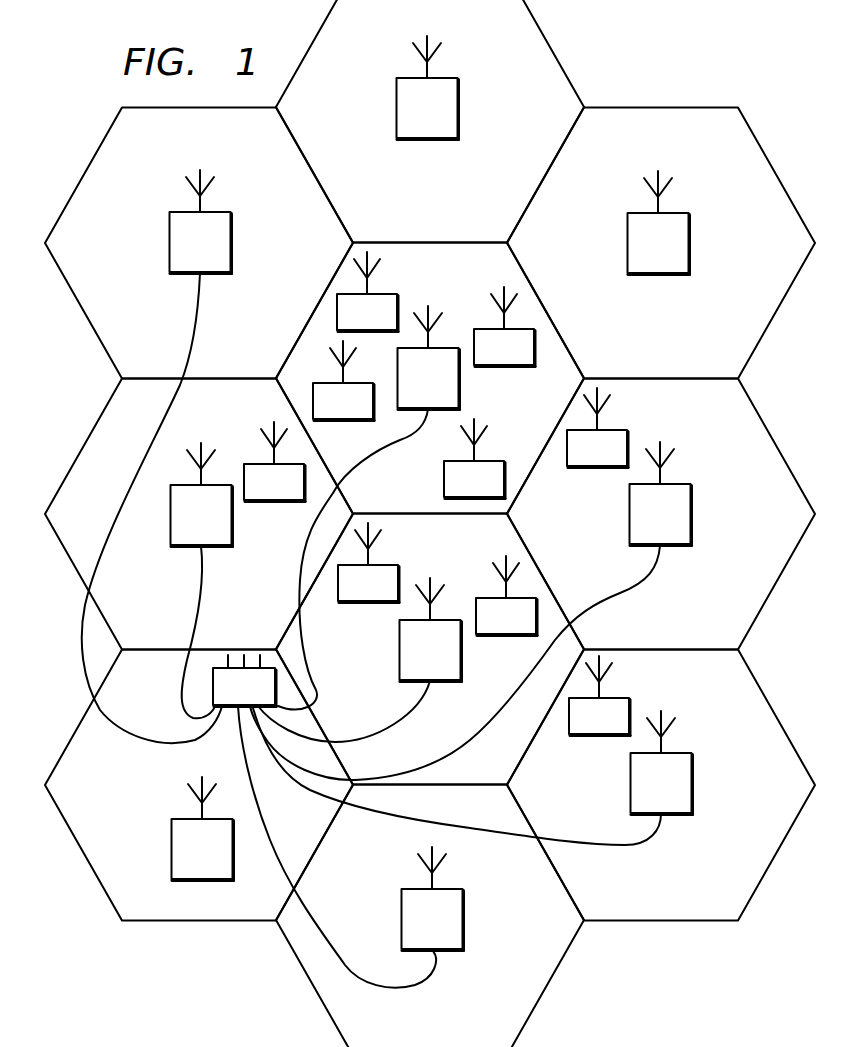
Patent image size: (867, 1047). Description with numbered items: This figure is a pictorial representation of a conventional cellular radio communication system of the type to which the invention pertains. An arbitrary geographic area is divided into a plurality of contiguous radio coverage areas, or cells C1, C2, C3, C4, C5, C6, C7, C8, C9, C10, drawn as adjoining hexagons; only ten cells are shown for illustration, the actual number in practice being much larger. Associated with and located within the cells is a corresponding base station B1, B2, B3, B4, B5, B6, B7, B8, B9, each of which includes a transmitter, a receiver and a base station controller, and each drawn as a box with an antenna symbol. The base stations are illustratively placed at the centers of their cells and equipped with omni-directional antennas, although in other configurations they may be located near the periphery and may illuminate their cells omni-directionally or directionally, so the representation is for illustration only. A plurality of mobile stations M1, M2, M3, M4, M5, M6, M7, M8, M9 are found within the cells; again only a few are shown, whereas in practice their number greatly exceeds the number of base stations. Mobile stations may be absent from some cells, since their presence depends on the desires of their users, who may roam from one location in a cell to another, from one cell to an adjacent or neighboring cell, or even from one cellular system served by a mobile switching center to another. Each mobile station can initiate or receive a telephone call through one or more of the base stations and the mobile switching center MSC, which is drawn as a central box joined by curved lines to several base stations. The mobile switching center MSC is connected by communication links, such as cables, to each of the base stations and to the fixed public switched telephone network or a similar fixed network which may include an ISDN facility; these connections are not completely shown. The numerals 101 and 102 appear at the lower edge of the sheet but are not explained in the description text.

The base station B1 is at (316, 593).
The base station B2 is at (659, 223).
The base station B3 is at (471, 611).
The base station B4 is at (360, 660).
The base station B5 is at (202, 580).
The base station B6 is at (157, 456).
The base station B7 is at (428, 88).
The base station B8 is at (473, 776).
The base station B9 is at (351, 847).
The mobile station M1 is at (599, 696).
The mobile station M2 is at (274, 462).
The mobile station M3 is at (343, 381).
The mobile station M4 is at (504, 327).
The mobile station M5 is at (597, 428).
The mobile station M6 is at (367, 292).
The mobile station M7 is at (474, 459).
The mobile station M8 is at (506, 596).
The mobile station M9 is at (368, 563).
The cell C1 is at (388, 499).
The cell C2 is at (610, 362).
The cell C3 is at (626, 636).
The cell C4 is at (384, 766).
The cell C5 is at (156, 637).
The cell C6 is at (152, 361).
The cell C7 is at (382, 226).
The cell C8 is at (617, 905).
The cell C9 is at (391, 1041).
The cell C10 is at (175, 904).
The mobile switching center MSC is at (244, 681).
The reference 101 is at (115, 1040).
The reference 102 is at (115, 1040).